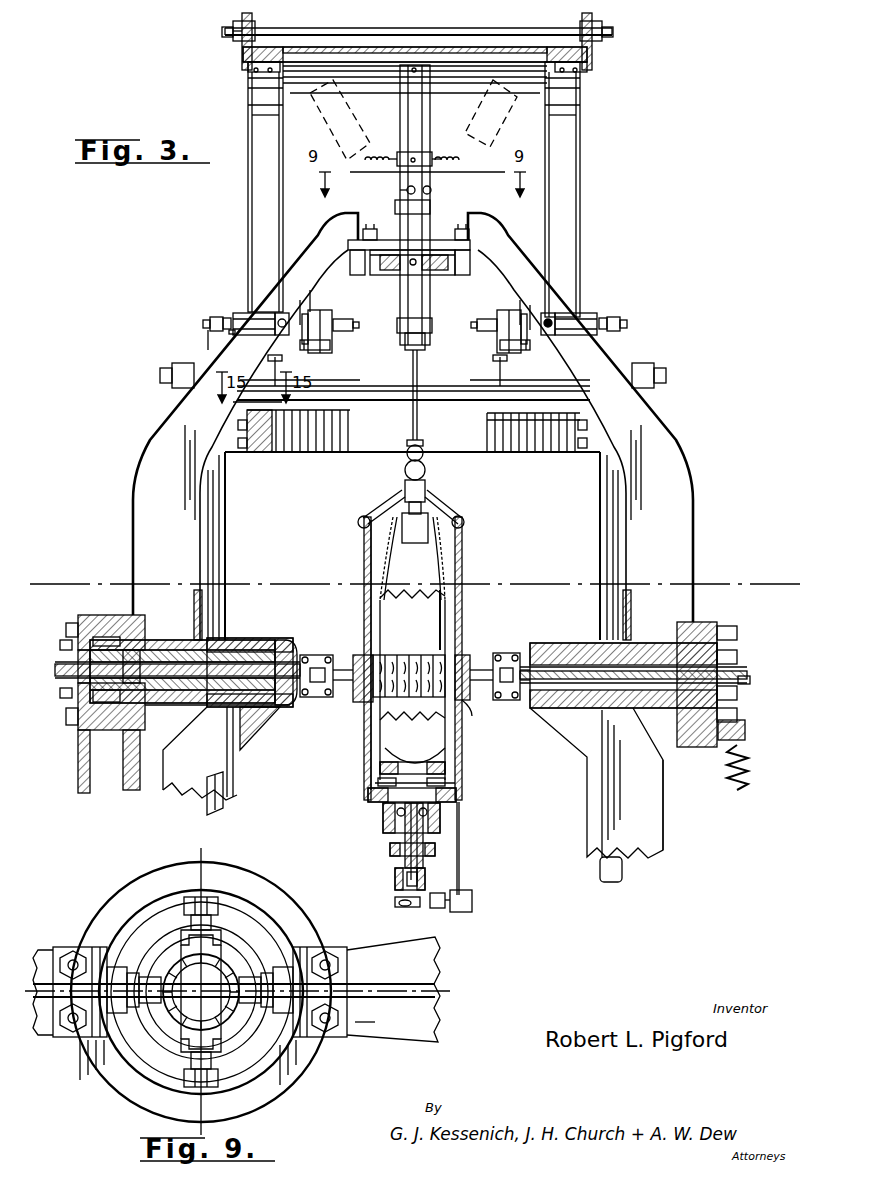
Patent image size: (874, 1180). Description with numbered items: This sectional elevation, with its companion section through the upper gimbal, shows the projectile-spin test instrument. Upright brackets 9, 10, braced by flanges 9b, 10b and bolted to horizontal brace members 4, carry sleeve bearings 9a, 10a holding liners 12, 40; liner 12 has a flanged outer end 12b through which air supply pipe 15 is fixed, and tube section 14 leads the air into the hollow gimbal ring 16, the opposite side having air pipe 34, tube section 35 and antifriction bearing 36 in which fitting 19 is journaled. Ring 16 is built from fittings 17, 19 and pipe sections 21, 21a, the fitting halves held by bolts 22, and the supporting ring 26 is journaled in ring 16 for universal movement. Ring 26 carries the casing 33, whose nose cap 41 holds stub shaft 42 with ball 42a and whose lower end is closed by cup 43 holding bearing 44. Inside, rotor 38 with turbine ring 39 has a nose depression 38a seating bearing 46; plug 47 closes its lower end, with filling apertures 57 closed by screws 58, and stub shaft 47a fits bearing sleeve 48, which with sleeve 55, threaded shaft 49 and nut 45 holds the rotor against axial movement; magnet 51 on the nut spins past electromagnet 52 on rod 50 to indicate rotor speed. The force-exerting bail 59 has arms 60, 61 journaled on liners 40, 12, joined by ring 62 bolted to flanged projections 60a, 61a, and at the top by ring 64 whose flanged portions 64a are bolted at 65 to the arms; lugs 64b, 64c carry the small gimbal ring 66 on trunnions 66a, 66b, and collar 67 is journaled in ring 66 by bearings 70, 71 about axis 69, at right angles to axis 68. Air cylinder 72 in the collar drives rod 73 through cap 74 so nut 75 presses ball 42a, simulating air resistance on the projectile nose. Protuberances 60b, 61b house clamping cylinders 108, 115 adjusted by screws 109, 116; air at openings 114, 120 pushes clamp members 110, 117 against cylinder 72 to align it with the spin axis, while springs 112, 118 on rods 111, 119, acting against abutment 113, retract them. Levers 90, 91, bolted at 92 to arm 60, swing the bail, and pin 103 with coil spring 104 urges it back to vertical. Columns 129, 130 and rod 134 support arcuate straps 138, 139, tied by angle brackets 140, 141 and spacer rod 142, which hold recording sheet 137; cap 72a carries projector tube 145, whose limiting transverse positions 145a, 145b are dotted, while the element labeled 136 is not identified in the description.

In FIG. 3, the spacer rod 142 is at (340, 29).
In FIG. 3, the angle bracket 140 is at (243, 55).
In FIG. 3, the angle bracket 141 is at (592, 54).
In FIG. 3, the frame bracket 136 is at (585, 68).
In FIG. 3, the light-sensitive recording sheet 137 is at (520, 47).
In FIG. 3, the arcuate strap 138 is at (250, 183).
In FIG. 3, the arcuate strap 139 is at (578, 222).
In FIG. 3, the air cylinder 72 is at (430, 297).
In FIG. 9, the air cylinder 72 is at (190, 990).
In FIG. 3, the projector tube 145 is at (420, 127).
In FIG. 3, the limiting transverse position of recorder tube 145a is at (500, 110).
In FIG. 3, the limiting transverse position of recorder tube 145b is at (325, 114).
In FIG. 3, the cap for air cylinder 72a is at (432, 207).
In FIG. 3, the second ring 64 is at (440, 240).
In FIG. 9, the second ring 64 is at (283, 1085).
In FIG. 3, the bolts 65 is at (370, 229).
In FIG. 9, the bolts 65 is at (70, 958).
In FIG. 3, the small gimbal ring 66 is at (390, 275).
In FIG. 9, the small gimbal ring 66 is at (235, 925).
In FIG. 3, the lug 64b is at (362, 272).
In FIG. 3, the lug 64c is at (462, 275).
In FIG. 3, the cap 74 is at (426, 328).
In FIG. 3, the rod 73 is at (418, 372).
In FIG. 3, the nut 75 is at (424, 448).
In FIG. 3, the ball 42a is at (405, 472).
In FIG. 3, the stub shaft 42 is at (427, 485).
In FIG. 3, the nose cap 41 is at (372, 505).
In FIG. 3, the antifriction bearing 46 is at (440, 505).
In FIG. 3, the rotor 38 is at (462, 608).
In FIG. 3, the central circular depression 38a is at (412, 545).
In FIG. 3, the casing 33 is at (366, 748).
In FIG. 3, the turbine ring 39 is at (410, 658).
In FIG. 3, the pipe section 21a is at (356, 660).
In FIG. 3, the pipe section 21 is at (478, 660).
In FIG. 3, the gimbal ring 16 is at (342, 688).
In FIG. 3, the fitting 19 is at (316, 655).
In FIG. 3, the bolts 22 is at (506, 654).
In FIG. 3, the fitting 17 is at (502, 700).
In FIG. 3, the supporting ring 26 is at (474, 715).
In FIG. 3, the apertures 57 is at (428, 762).
In FIG. 3, the plug 47 is at (436, 767).
In FIG. 3, the removable screw 58 is at (448, 781).
In FIG. 3, the stub shaft 47a is at (456, 795).
In FIG. 3, the cup 43 is at (383, 808).
In FIG. 3, the antifriction bearing 44 is at (397, 815).
In FIG. 3, the sleeve 55 is at (390, 849).
In FIG. 3, the bearing sleeve 48 is at (425, 836).
In FIG. 3, the cup or nut 45 is at (395, 877).
In FIG. 3, the threaded shaft 49 is at (420, 880).
In FIG. 3, the rod 50 is at (460, 812).
In FIG. 3, the magnet 51 is at (400, 907).
In FIG. 3, the electromagnet 52 is at (452, 912).
In FIG. 3, the bolts 92 is at (66, 630).
In FIG. 3, the lever 90 is at (78, 790).
In FIG. 3, the lever 91 is at (124, 790).
In FIG. 3, the liner 40 is at (165, 655).
In FIG. 3, the air lead-in pipe 34 is at (55, 676).
In FIG. 3, the sleeve bearing 10a is at (250, 632).
In FIG. 3, the antifriction bearing 36 is at (290, 650).
In FIG. 3, the tube section 35 is at (210, 708).
In FIG. 3, the upright bracket 10 is at (238, 758).
In FIG. 3, the central vertical bracing flange 10b is at (208, 808).
In FIG. 3, the sleeve bearing 9a is at (568, 645).
In FIG. 3, the air supply pipe 15 is at (747, 670).
In FIG. 3, the flanged outer end 12b is at (748, 684).
In FIG. 3, the liner 12 is at (660, 643).
In FIG. 3, the pin 103 is at (745, 730).
In FIG. 3, the coil spring 104 is at (749, 782).
In FIG. 3, the upright bracket 9 is at (590, 816).
In FIG. 3, the central vertical bracing flange 9b is at (663, 806).
In FIG. 3, the tube section 14 is at (576, 708).
In FIG. 3, the arm 60 is at (133, 500).
In FIG. 9, the arm 60 is at (40, 1036).
In FIG. 3, the arm 61 is at (693, 495).
In FIG. 9, the arm 61 is at (368, 1040).
In FIG. 3, the bail 59 is at (683, 446).
In FIG. 3, the column 130 is at (226, 548).
In FIG. 3, the column 129 is at (600, 548).
In FIG. 3, the rod 134 is at (657, 380).
In FIG. 3, the ring 62 is at (315, 452).
In FIG. 3, the flanged projection 60a is at (237, 452).
In FIG. 3, the flanged projection 61a is at (585, 452).
In FIG. 3, the cylindrical protuberance 60b is at (290, 370).
In FIG. 3, the cylindrical protuberance 61b is at (515, 352).
In FIG. 3, the air cylinder 108 is at (318, 310).
In FIG. 3, the supply opening 114 is at (270, 338).
In FIG. 3, the clamp member 110 is at (345, 320).
In FIG. 3, the abutment 113 is at (214, 317).
In FIG. 3, the spring 112 is at (228, 317).
In FIG. 3, the rod 111 is at (222, 332).
In FIG. 3, the screw 109 is at (332, 346).
In FIG. 3, the cylinder 115 is at (510, 310).
In FIG. 3, the supply opening 120 is at (548, 320).
In FIG. 3, the clamp member 117 is at (476, 325).
In FIG. 3, the spring 118 is at (609, 317).
In FIG. 3, the piston rod 119 is at (604, 330).
In FIG. 3, the adjusting screw 116 is at (532, 350).
In FIG. 3, the horizontal brace member 4 is at (33, 584).
In FIG. 9, the axis 69 is at (201, 870).
In FIG. 9, the collar 67 is at (176, 1037).
In FIG. 9, the trunnion 66a is at (192, 970).
In FIG. 9, the trunnion 66b is at (238, 990).
In FIG. 9, the bearing 70 is at (184, 905).
In FIG. 9, the bearing 71 is at (218, 1072).
In FIG. 9, the flanged portion 64a is at (95, 947).
In FIG. 9, the axis 68 is at (375, 985).